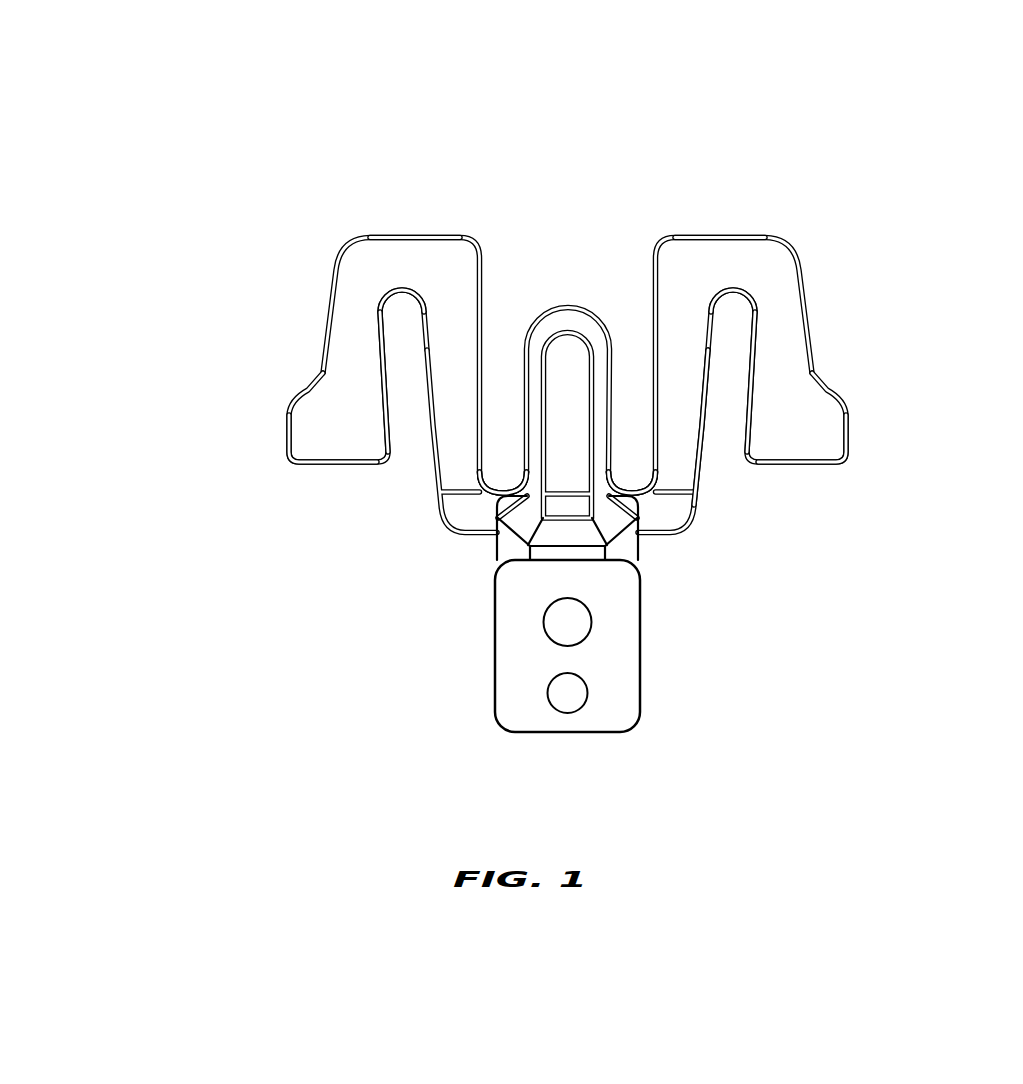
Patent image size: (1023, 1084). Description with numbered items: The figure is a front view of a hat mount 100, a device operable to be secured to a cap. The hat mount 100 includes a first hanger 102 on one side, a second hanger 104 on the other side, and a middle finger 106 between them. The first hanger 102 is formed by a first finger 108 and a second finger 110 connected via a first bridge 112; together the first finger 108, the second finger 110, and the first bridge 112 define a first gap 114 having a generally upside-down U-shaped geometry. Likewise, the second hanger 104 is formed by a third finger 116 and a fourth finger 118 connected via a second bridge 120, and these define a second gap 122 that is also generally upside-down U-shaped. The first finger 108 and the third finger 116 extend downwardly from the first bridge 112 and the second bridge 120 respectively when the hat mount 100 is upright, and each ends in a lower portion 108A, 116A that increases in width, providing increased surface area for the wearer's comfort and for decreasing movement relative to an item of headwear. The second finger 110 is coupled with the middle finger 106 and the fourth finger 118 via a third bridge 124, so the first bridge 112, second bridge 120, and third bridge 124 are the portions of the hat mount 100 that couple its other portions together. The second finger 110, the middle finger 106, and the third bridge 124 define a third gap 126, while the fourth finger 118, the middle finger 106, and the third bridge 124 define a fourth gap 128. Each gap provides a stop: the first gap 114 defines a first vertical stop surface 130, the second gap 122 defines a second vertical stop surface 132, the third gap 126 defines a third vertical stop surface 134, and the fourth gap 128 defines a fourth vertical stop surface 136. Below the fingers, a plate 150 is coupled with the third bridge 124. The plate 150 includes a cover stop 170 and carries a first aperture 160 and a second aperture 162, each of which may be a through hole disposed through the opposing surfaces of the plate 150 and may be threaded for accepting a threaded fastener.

The hat mount 100 is at (160, 172).
The first hanger 102 is at (335, 268).
The second hanger 104 is at (812, 274).
The middle finger 106 is at (568, 338).
The first finger 108 is at (347, 372).
The lower portion 108A is at (333, 444).
The second finger 110 is at (463, 440).
The first bridge 112 is at (405, 265).
The first gap 114 is at (414, 447).
The third finger 116 is at (780, 377).
The lower portion 116A is at (802, 450).
The fourth finger 118 is at (697, 487).
The second bridge 120 is at (727, 272).
The second gap 122 is at (714, 452).
The third bridge 124 is at (634, 484).
The third gap 126 is at (508, 328).
The fourth gap 128 is at (621, 326).
The first vertical stop surface 130 is at (411, 320).
The second vertical stop surface 132 is at (725, 320).
The third vertical stop surface 134 is at (503, 484).
The fourth vertical stop surface 136 is at (675, 440).
The plate 150 is at (615, 635).
The first aperture 160 is at (553, 628).
The second aperture 162 is at (560, 704).
The cover stop 170 is at (528, 536).